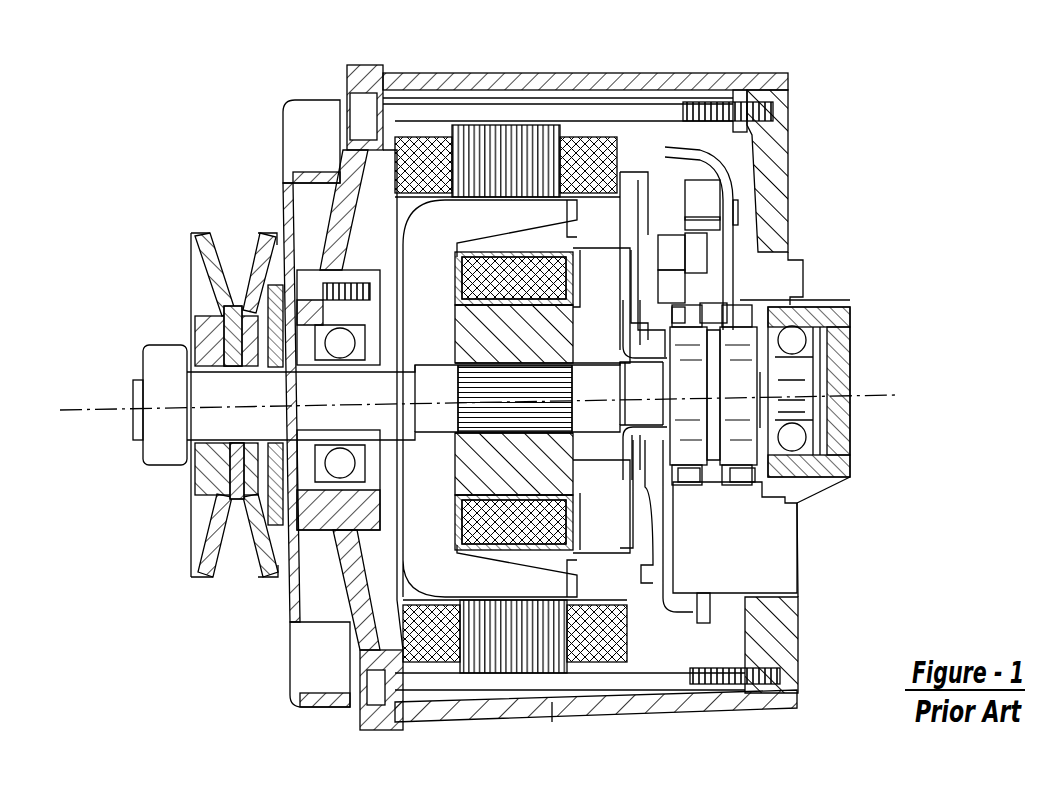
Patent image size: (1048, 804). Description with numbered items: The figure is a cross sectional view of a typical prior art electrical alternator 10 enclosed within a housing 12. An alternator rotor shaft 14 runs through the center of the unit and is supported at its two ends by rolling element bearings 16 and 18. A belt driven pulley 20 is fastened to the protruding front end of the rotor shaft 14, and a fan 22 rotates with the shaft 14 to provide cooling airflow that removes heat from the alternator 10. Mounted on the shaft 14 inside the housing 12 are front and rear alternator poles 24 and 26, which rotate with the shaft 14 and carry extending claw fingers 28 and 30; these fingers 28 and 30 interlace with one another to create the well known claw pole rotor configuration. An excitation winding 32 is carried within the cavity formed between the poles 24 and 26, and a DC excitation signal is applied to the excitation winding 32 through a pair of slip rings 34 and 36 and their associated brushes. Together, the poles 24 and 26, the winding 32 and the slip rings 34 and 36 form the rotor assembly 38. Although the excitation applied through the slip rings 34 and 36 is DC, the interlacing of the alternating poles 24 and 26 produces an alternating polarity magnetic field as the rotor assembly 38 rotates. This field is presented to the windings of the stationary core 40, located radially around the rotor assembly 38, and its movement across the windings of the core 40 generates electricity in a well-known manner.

The electrical alternator 10 is at (858, 119).
The housing 12 is at (732, 72).
The rotor shaft 14 is at (247, 474).
The rolling element bearing 16 is at (303, 525).
The rolling element bearing 18 is at (815, 325).
The belt driven pulley 20 is at (223, 237).
The fan 22 is at (305, 132).
The front alternator pole 24 is at (430, 548).
The rear alternator pole 26 is at (608, 567).
The claw fingers 28 is at (508, 580).
The claw fingers 30 is at (563, 573).
The excitation winding 32 is at (537, 265).
The slip ring 34 is at (687, 370).
The slip ring 36 is at (753, 440).
The rotor assembly 38 is at (430, 221).
The stationary core 40 is at (412, 160).